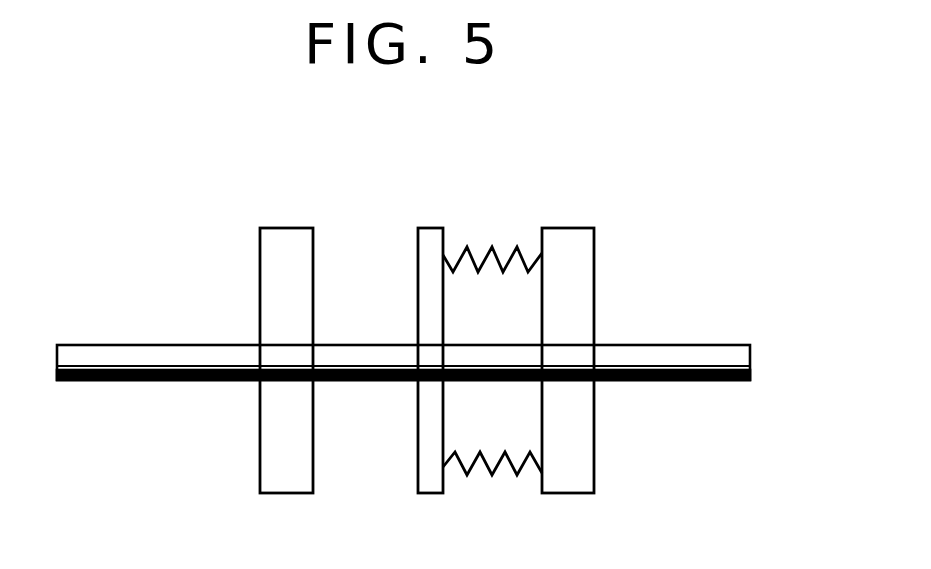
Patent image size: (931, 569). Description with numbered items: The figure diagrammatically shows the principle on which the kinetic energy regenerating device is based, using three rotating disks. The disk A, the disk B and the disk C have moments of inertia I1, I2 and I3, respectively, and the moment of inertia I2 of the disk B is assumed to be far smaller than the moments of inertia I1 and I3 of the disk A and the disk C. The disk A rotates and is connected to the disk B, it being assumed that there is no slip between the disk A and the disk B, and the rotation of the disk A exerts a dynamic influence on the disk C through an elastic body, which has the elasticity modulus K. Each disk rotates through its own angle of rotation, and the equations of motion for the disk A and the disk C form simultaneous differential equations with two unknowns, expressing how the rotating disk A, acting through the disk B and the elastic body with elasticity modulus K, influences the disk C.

The disk A is at (295, 478).
The disk B is at (433, 482).
The disk C is at (577, 478).
The elasticity modulus K is at (500, 470).
The moment of inertia I1 is at (286, 347).
The moment of inertia I2 is at (428, 347).
The moment of inertia I3 is at (568, 347).